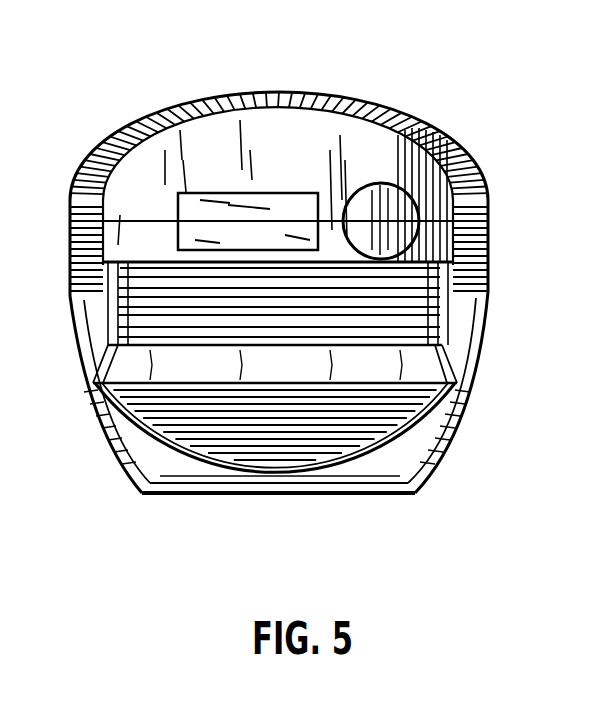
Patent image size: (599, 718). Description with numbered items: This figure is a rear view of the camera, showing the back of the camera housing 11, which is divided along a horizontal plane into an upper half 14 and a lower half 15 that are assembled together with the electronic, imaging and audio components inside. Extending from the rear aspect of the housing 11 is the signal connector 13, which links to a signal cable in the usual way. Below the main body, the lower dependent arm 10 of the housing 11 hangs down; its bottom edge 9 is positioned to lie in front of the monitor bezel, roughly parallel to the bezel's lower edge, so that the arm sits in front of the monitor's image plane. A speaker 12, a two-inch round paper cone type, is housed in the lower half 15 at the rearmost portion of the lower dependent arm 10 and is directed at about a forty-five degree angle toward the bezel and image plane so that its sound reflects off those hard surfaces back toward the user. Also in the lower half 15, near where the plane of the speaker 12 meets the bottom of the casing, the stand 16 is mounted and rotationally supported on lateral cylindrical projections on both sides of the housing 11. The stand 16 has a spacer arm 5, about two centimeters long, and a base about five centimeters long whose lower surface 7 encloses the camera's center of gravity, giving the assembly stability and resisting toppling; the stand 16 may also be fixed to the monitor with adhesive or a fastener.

The spacer arm 5 is at (472, 340).
The lower surface 7 is at (455, 405).
The bottom edge 9 is at (188, 498).
The lower dependent arm 10 is at (413, 467).
The camera housing 11 is at (304, 172).
The speaker 12 is at (333, 450).
The signal connector 13 is at (378, 215).
The upper half 14 is at (153, 183).
The lower half 15 is at (143, 257).
The stand 16 is at (295, 380).